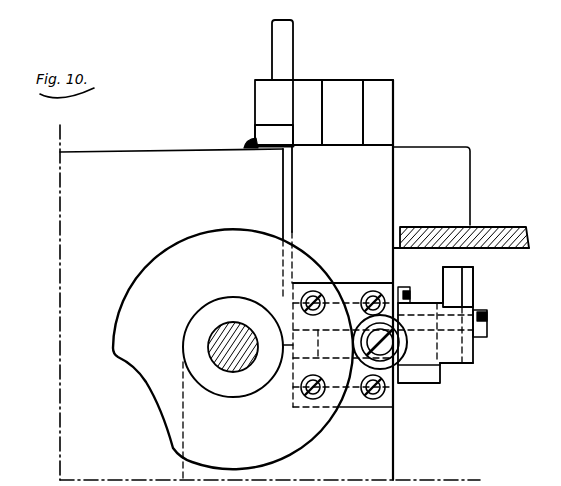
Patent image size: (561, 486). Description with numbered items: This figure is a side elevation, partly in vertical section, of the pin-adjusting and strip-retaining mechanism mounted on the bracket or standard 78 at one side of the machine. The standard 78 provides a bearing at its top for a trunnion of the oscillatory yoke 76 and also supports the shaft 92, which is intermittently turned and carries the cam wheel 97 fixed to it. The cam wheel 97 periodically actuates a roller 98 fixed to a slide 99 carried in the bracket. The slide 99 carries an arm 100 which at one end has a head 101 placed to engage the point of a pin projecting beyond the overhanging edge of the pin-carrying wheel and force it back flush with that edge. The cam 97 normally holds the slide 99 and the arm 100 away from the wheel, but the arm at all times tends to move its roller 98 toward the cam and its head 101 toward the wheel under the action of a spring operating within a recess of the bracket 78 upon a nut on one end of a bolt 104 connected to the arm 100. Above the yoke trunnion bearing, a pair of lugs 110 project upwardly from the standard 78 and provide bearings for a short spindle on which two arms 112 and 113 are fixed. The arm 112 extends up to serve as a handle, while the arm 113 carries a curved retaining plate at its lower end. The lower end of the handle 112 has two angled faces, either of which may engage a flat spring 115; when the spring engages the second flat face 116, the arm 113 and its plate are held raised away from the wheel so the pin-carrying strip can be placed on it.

The oscillatory yoke 76 is at (513, 231).
The bracket or standard 78 is at (141, 153).
The shaft 92 is at (222, 329).
The cam wheel 97 is at (176, 245).
The roller 98 is at (409, 358).
The slide 99 is at (430, 350).
The arm 100 is at (474, 305).
The head 101 is at (455, 282).
The bolt 104 is at (487, 333).
The lugs 110 is at (308, 90).
The handle arm 112 is at (282, 43).
The arm 113 is at (350, 90).
The flat spring 115 is at (262, 150).
The second flat face 116 is at (274, 211).